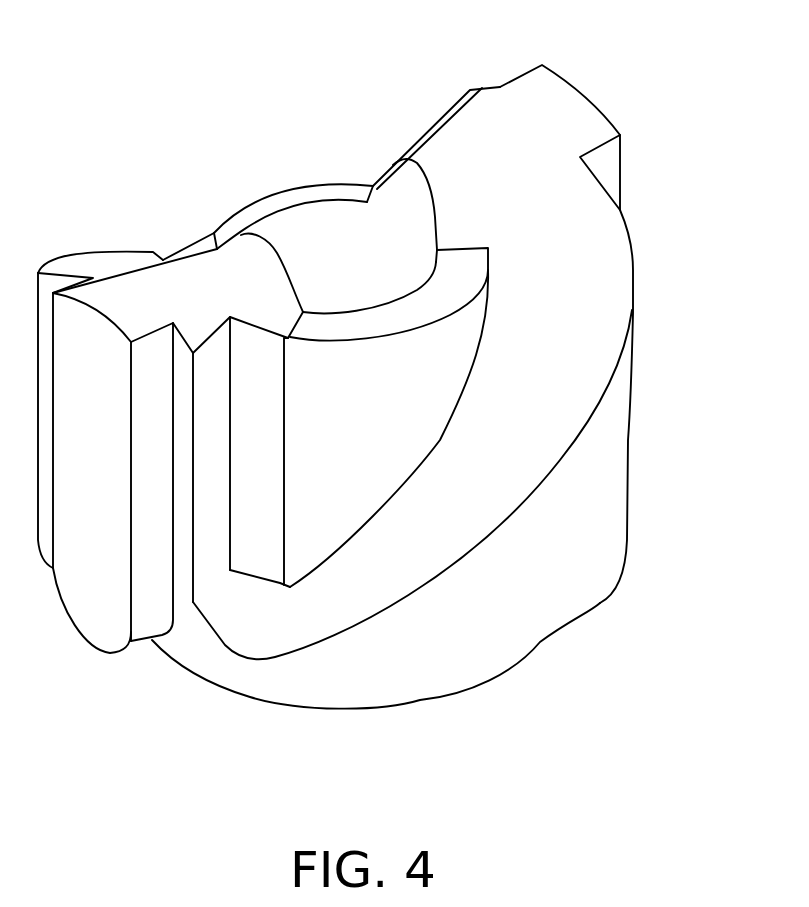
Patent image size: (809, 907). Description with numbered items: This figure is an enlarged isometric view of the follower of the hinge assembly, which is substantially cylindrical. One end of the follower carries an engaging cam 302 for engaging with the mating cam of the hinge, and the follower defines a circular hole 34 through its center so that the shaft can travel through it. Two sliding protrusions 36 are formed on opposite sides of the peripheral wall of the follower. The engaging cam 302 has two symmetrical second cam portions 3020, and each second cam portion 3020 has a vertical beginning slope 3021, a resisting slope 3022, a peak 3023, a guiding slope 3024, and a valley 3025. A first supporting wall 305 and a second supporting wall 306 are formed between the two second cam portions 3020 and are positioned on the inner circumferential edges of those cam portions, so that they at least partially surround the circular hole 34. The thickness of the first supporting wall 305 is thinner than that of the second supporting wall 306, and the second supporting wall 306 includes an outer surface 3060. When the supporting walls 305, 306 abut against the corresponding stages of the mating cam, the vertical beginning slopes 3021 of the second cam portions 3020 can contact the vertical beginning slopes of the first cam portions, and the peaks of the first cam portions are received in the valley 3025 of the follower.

The engaging cam 302 is at (570, 333).
The second cam portion 3020 is at (23, 50).
The vertical beginning slope 3021 is at (217, 365).
The resisting slope 3022 is at (214, 287).
The peak 3023 is at (135, 275).
The guiding slope 3024 is at (82, 265).
The valley 3025 is at (250, 612).
The first supporting wall 305 is at (347, 193).
The second supporting wall 306 is at (413, 313).
The outer surface 3060 is at (362, 432).
The circular hole 34 is at (398, 248).
The sliding protrusion 36 is at (103, 582).